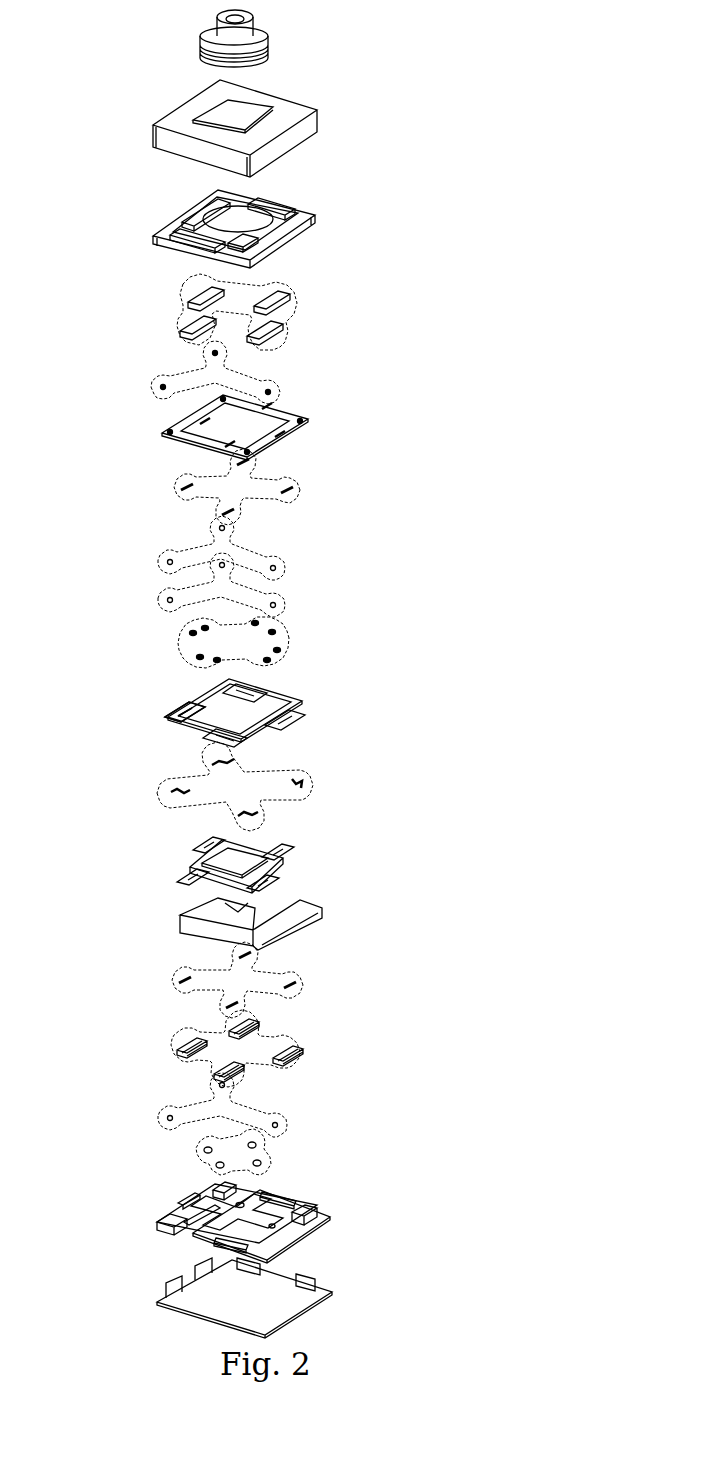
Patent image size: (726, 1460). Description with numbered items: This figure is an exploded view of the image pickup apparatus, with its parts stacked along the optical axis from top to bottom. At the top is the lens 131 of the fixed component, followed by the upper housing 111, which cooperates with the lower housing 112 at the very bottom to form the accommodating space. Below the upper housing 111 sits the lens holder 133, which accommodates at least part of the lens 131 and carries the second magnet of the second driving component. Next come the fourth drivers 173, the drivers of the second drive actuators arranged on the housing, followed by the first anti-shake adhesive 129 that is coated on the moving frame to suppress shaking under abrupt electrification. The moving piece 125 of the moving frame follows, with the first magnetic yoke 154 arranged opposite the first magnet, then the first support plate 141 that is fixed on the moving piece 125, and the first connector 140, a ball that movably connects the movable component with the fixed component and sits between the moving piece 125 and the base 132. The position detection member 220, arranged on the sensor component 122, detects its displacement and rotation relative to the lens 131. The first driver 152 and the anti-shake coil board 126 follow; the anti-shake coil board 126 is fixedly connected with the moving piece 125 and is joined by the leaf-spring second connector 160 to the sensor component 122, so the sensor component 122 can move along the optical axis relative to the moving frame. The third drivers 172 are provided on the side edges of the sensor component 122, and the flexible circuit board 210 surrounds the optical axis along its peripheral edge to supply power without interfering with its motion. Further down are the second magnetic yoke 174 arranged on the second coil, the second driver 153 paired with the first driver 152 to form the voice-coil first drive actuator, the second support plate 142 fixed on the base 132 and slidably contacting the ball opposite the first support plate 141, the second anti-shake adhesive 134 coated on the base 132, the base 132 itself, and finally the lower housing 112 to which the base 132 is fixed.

The lens 131 is at (268, 32).
The upper housing 111 is at (270, 106).
The lens holder 133 is at (268, 204).
The fourth driver 173 is at (183, 293).
The first anti-shake adhesive 129 is at (263, 383).
The moving piece 125 is at (285, 428).
The first magnetic yoke 154 is at (270, 478).
The first support plate 141 is at (253, 550).
The first connector 140 is at (252, 590).
The position detection member 220 is at (283, 630).
The first driver 152 is at (190, 705).
The anti-shake coil board 126 is at (265, 705).
The second connector 160 is at (290, 773).
The sensor component 122 is at (253, 847).
The third driver 172 is at (180, 872).
The flexible circuit board 210 is at (310, 910).
The second magnetic yoke 174 is at (273, 972).
The second driver 153 is at (178, 1035).
The second support plate 142 is at (245, 1118).
The second anti-shake adhesive 134 is at (268, 1152).
The base 132 is at (283, 1200).
The lower housing 112 is at (275, 1312).